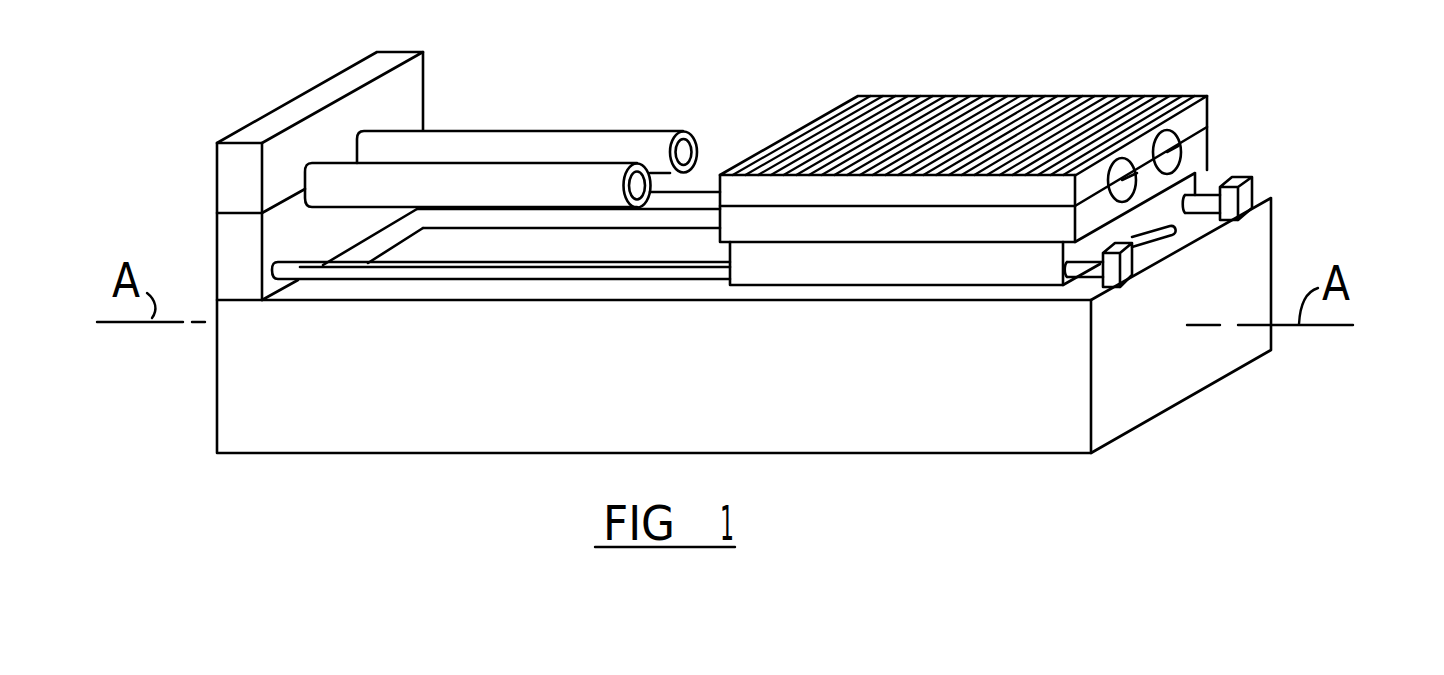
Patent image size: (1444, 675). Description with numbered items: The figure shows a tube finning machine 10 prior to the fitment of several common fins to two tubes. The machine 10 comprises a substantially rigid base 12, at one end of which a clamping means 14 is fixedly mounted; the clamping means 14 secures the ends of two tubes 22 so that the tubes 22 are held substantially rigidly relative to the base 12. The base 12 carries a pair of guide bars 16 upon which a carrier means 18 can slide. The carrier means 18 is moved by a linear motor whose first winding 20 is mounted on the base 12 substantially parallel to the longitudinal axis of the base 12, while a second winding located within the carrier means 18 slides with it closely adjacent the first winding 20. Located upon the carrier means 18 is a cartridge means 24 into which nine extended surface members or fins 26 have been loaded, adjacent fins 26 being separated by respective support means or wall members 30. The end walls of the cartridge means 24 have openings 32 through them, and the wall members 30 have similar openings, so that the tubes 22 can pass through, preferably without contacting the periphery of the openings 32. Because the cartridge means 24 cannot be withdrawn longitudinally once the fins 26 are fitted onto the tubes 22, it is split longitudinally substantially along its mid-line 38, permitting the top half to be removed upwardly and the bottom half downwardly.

The tube finning machine 10 is at (1345, 105).
The base 12 is at (661, 413).
The clamping means 14 is at (224, 203).
The guide bars 16 is at (683, 200).
The carrier means 18 is at (1004, 258).
The first winding 20 is at (693, 247).
The tubes 22 is at (467, 177).
The cartridge means 24 is at (1200, 86).
The fins 26 is at (920, 97).
The wall members 30 is at (993, 97).
The openings 32 is at (1208, 143).
The mid-line 38 is at (910, 212).